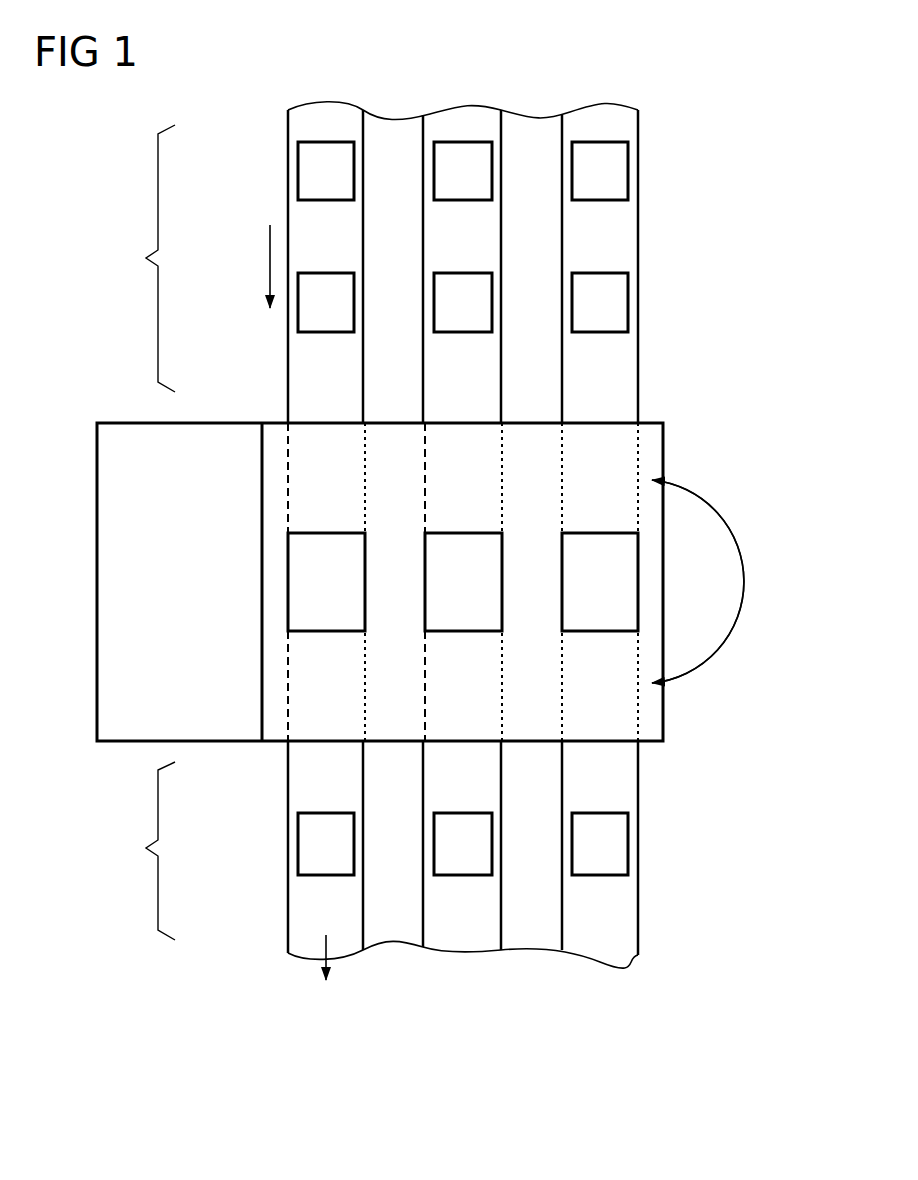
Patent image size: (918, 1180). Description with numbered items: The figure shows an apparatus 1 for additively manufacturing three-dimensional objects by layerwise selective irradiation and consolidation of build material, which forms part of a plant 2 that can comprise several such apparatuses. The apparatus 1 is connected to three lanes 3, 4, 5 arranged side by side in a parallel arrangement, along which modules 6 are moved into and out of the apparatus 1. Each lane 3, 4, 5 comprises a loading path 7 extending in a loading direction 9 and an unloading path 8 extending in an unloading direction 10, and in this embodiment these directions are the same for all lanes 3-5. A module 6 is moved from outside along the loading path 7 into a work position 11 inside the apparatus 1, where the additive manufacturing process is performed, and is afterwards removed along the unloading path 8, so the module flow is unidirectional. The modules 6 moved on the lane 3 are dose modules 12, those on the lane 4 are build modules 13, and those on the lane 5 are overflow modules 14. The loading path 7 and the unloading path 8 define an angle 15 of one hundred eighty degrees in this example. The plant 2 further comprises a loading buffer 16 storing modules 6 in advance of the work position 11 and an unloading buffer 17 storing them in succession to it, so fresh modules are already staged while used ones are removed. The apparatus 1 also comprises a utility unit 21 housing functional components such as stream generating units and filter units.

The apparatus 1 is at (664, 450).
The plant 2 is at (730, 708).
The lane 3 is at (288, 397).
The lane 4 is at (423, 397).
The lane 5 is at (638, 397).
The module 6 is at (280, 168).
The loading path 7 is at (288, 208).
The unloading path 8 is at (288, 920).
The loading direction 9 is at (270, 256).
The unloading direction 10 is at (326, 968).
The work position 11 is at (365, 572).
The dose module 12 is at (320, 332).
The build module 13 is at (460, 332).
The overflow module 14 is at (628, 305).
The angle 15 is at (742, 582).
The loading buffer 16 is at (141, 258).
The unloading buffer 17 is at (141, 851).
The utility unit 21 is at (110, 563).